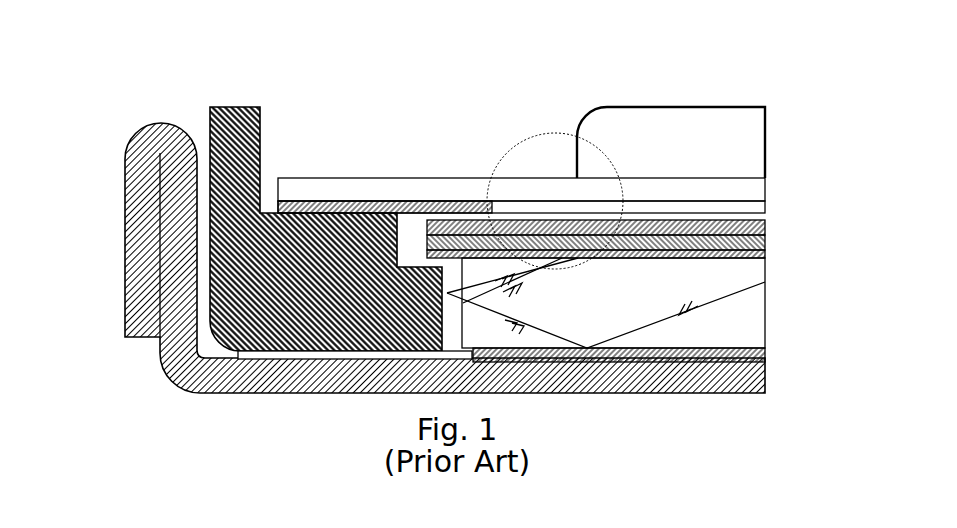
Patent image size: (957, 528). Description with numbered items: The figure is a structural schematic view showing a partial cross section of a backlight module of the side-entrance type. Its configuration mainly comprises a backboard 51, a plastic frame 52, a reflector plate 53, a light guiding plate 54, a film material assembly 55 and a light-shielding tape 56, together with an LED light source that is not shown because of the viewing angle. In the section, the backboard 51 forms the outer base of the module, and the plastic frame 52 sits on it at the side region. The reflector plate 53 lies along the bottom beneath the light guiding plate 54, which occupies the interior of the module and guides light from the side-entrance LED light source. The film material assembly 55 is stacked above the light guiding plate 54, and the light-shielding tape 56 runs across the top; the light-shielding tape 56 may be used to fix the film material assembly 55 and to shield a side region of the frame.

The backboard 51 is at (125, 278).
The plastic frame 52 is at (208, 128).
The reflector plate 53 is at (766, 356).
The light guiding plate 54 is at (753, 316).
The film material assembly 55 is at (766, 232).
The light-shielding tape 56 is at (405, 207).